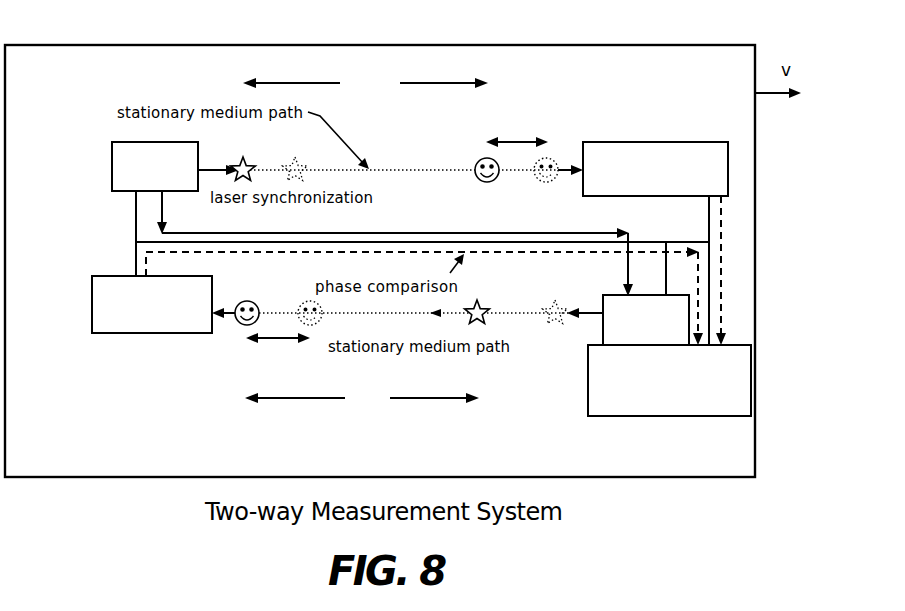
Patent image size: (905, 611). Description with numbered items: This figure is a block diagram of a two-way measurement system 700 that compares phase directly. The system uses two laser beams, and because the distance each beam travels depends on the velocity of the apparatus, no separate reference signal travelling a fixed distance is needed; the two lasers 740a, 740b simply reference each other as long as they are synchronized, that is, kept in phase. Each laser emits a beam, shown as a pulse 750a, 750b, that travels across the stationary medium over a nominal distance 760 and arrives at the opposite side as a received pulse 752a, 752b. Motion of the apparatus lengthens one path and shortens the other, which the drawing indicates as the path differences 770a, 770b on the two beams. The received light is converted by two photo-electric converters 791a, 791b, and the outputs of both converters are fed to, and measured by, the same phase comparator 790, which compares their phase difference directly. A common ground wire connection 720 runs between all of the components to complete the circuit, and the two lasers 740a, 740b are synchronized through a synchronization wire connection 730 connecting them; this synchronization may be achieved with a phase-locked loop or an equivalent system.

The two-way measurement system 700 is at (150, 29).
The common ground wire connection 720 is at (130, 236).
The synchronization wire connection 730 is at (422, 226).
The first laser 740a is at (112, 173).
The second laser 740b is at (603, 322).
The first laser pulse 750a is at (250, 163).
The second laser pulse 750b is at (481, 301).
The first received pulse 752a is at (487, 183).
The second received pulse 752b is at (250, 300).
The distance d 760 is at (433, 81).
The positive path difference +Δd 770a is at (531, 140).
The negative path difference −Δd 770b is at (261, 342).
The phase comparator 790 is at (622, 418).
The photo-electric converter 791a is at (672, 141).
The photo-electric converter 791b is at (105, 335).